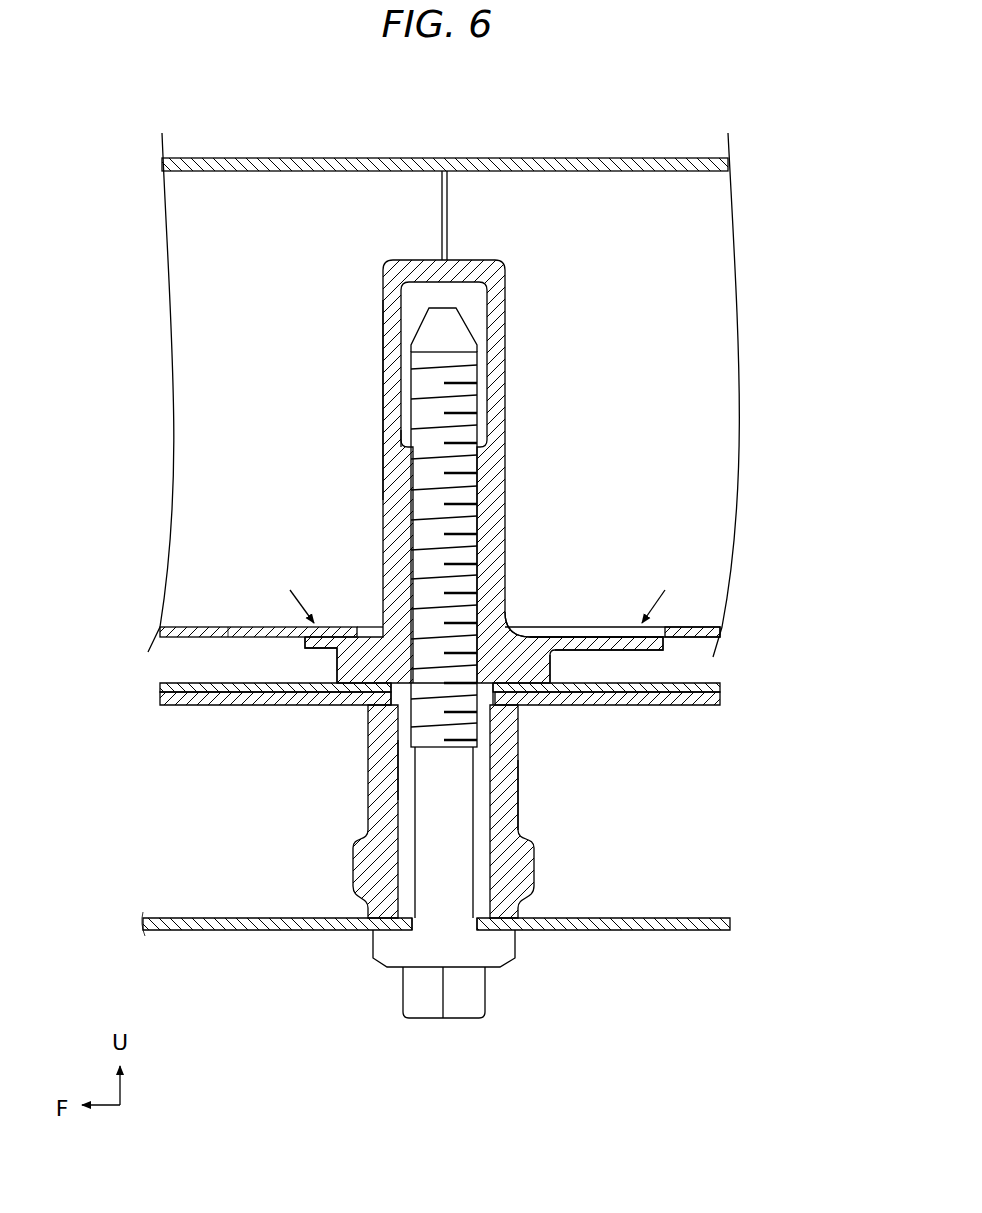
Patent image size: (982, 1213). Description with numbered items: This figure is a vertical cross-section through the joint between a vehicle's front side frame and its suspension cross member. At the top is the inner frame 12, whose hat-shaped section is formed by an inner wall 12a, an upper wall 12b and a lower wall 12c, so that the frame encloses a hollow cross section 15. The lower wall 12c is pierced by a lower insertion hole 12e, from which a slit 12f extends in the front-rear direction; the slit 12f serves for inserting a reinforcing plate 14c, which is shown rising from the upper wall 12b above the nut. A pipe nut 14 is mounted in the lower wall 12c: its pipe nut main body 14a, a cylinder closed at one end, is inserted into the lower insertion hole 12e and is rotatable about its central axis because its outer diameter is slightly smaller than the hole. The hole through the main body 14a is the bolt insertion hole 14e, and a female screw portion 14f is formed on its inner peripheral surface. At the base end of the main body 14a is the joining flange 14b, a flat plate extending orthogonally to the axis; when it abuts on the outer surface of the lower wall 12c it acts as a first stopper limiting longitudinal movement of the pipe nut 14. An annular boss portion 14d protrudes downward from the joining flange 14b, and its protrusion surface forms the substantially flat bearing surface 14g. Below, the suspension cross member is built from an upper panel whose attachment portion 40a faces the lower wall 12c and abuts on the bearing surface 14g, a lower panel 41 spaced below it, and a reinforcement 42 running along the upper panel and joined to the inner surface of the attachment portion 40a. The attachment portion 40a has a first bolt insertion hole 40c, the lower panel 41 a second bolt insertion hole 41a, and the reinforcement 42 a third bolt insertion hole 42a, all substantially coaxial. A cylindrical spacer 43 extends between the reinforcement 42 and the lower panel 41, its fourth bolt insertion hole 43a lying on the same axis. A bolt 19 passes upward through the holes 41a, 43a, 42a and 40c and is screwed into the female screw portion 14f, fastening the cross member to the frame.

The inner frame 12 is at (440, 387).
The inner wall 12a is at (740, 411).
The upper wall 12b is at (283, 158).
The lower wall 12c is at (188, 637).
The lower insertion hole 12e is at (513, 627).
The slit 12f is at (243, 627).
The pipe nut 14 is at (517, 470).
The pipe nut main body 14a is at (383, 380).
The joining flange 14b is at (620, 650).
The reinforcing plate 14c is at (448, 198).
The boss portion 14d is at (337, 670).
The bolt insertion hole 14e is at (398, 753).
The female screw portion 14f is at (403, 507).
The bearing surface 14g is at (530, 680).
The hollow cross section 15 is at (610, 349).
The bolt 19 is at (385, 965).
The attachment portion 40a is at (687, 683).
The first bolt insertion hole 40c is at (397, 705).
The lower panel 41 is at (436, 956).
The second bolt insertion hole 41a is at (478, 930).
The reinforcement 42 is at (440, 750).
The third bolt insertion hole 42a is at (487, 707).
The spacer 43 is at (446, 811).
The fourth bolt insertion hole 43a is at (480, 853).